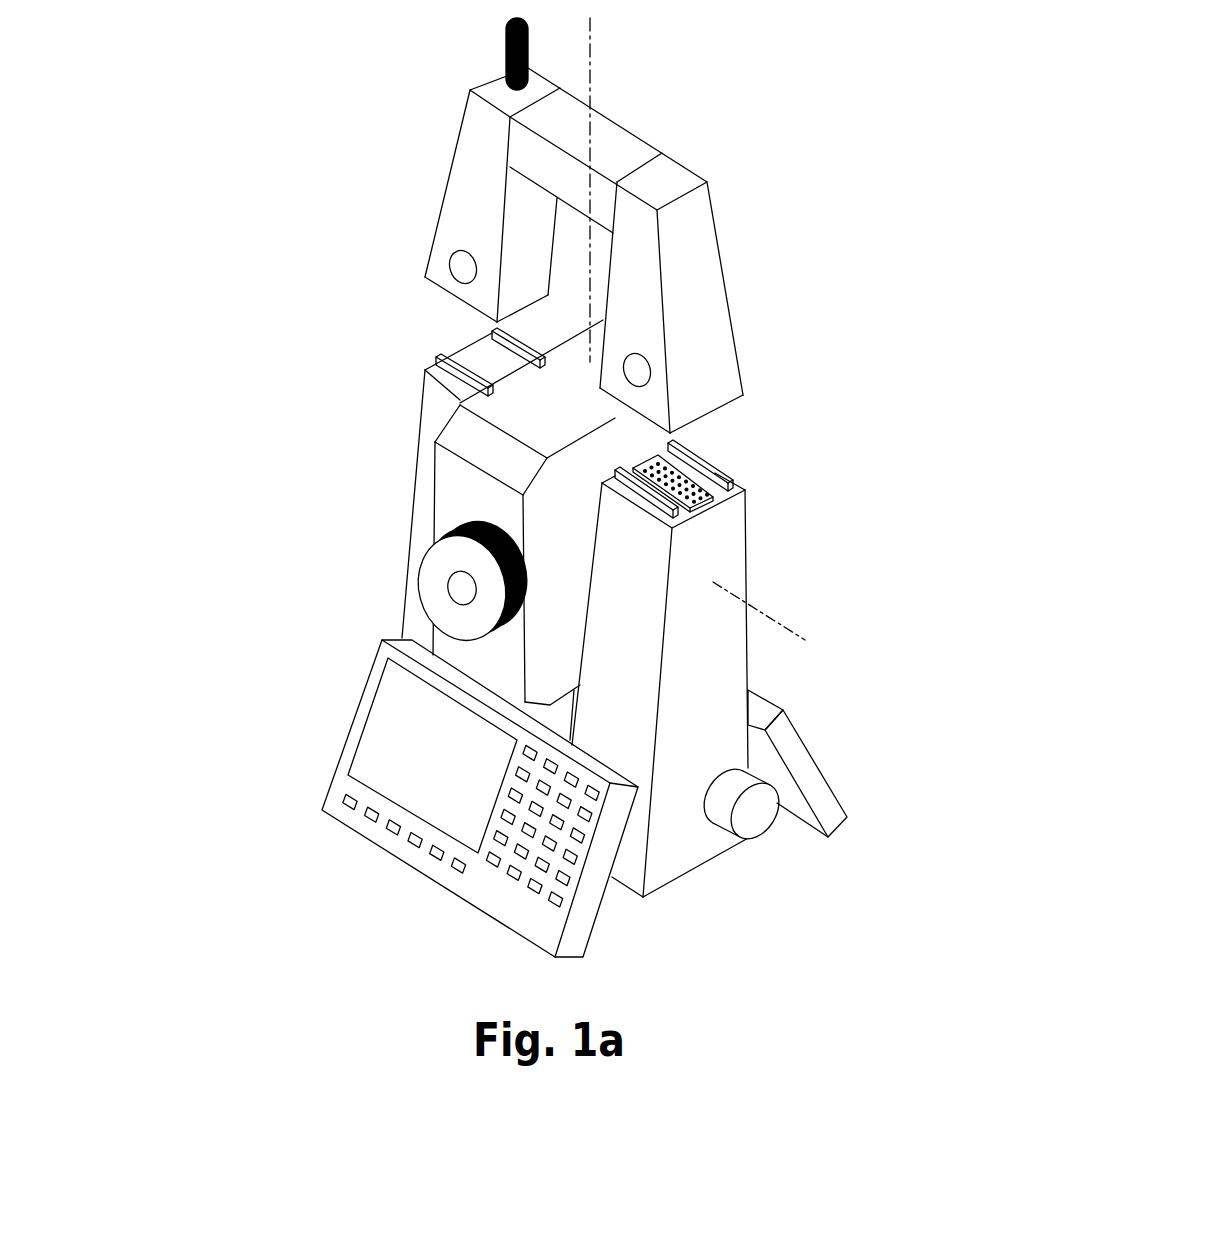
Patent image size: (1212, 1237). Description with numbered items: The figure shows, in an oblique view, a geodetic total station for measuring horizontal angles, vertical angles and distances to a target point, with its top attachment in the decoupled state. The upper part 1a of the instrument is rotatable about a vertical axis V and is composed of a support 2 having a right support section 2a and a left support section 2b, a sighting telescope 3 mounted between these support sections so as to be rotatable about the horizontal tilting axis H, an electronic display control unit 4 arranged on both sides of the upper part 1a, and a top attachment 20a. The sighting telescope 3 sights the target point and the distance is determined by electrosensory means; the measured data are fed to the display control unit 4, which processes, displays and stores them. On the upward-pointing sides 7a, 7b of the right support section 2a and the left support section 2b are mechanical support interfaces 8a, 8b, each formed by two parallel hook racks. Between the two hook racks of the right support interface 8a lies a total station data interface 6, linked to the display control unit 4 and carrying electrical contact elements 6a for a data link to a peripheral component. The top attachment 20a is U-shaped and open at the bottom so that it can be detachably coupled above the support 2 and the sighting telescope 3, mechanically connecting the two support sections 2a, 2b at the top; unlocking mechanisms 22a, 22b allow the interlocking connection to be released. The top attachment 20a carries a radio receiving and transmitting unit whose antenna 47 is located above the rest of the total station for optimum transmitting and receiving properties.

The upper part 1a is at (806, 58).
The support 2 is at (755, 672).
The right support section 2a is at (720, 565).
The left support section 2b is at (428, 427).
The sighting telescope 3 is at (467, 502).
The electronic display control unit 4 is at (368, 702).
The total station data interface 6 is at (747, 482).
The electrical contact elements 6a is at (700, 492).
The upward-pointing side of the right support section 7a is at (699, 445).
The upward-pointing side of the left support section 7b is at (461, 333).
The right mechanical support interface 8a is at (625, 483).
The left mechanical support interface 8b is at (500, 343).
The top attachment 20a is at (741, 258).
The unlocking mechanism 22a is at (637, 370).
The unlocking mechanism 22b is at (463, 267).
The antenna 47 is at (507, 45).
The vertical axis V is at (592, 80).
The horizontal tilting axis H is at (808, 640).